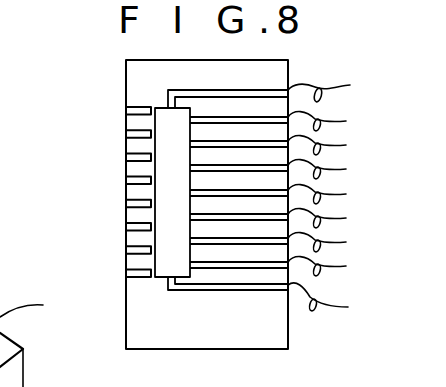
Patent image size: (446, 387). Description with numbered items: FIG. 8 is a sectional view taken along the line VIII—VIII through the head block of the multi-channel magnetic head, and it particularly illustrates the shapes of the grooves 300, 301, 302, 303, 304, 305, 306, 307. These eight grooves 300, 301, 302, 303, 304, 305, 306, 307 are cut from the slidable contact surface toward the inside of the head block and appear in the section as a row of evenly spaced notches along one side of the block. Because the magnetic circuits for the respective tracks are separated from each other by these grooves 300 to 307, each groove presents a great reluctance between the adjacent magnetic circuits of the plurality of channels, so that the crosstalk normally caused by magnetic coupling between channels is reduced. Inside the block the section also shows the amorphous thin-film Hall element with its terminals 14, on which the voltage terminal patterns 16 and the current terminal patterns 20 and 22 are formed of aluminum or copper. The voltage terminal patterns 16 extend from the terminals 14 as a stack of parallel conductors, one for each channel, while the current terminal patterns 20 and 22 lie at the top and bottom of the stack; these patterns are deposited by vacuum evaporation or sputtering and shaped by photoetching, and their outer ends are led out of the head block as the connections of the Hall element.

The terminal 14 is at (172, 268).
The voltage terminal pattern 16 is at (370, 287).
The current terminal pattern 20 is at (335, 89).
The current terminal pattern 22 is at (331, 303).
The groove 300 is at (127, 107).
The groove 301 is at (127, 133).
The groove 302 is at (132, 157).
The groove 303 is at (127, 182).
The groove 304 is at (132, 207).
The groove 305 is at (130, 232).
The groove 306 is at (132, 255).
The groove 307 is at (132, 280).